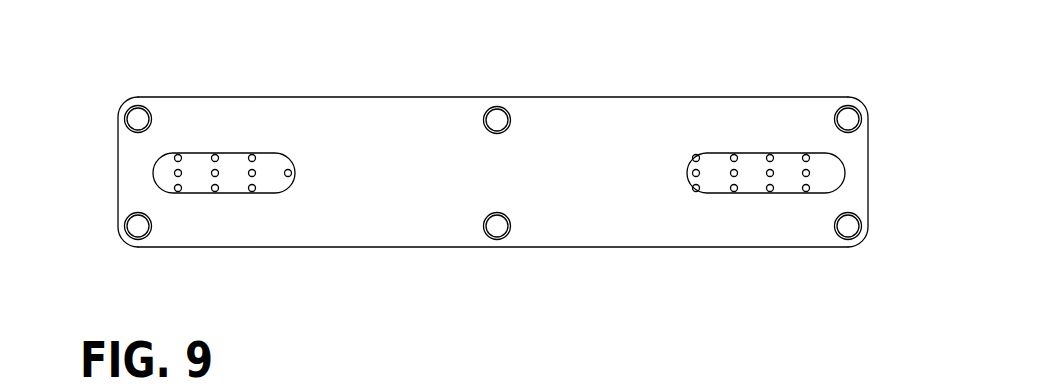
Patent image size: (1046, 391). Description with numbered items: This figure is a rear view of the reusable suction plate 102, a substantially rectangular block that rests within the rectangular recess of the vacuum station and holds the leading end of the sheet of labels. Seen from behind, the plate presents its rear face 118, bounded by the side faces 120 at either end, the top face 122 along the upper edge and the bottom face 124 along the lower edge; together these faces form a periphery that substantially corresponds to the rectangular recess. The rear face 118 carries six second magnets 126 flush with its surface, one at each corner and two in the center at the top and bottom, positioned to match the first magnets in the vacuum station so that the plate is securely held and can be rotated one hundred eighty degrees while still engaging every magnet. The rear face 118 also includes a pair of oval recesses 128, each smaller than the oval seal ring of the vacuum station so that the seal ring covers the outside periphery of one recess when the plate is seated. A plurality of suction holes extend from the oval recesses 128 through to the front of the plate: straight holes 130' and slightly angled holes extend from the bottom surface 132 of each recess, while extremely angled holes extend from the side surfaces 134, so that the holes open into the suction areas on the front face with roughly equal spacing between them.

The reusable suction plate 102 is at (530, 84).
The rear face 118 is at (450, 186).
The side faces 120 is at (120, 147).
The top face 122 is at (653, 97).
The bottom face 124 is at (493, 279).
The second magnets 126 is at (130, 114).
The oval recesses 128 is at (550, 160).
The straight holes 130' is at (564, 176).
The bottom surface 132 is at (263, 172).
The side surfaces 134 is at (197, 153).